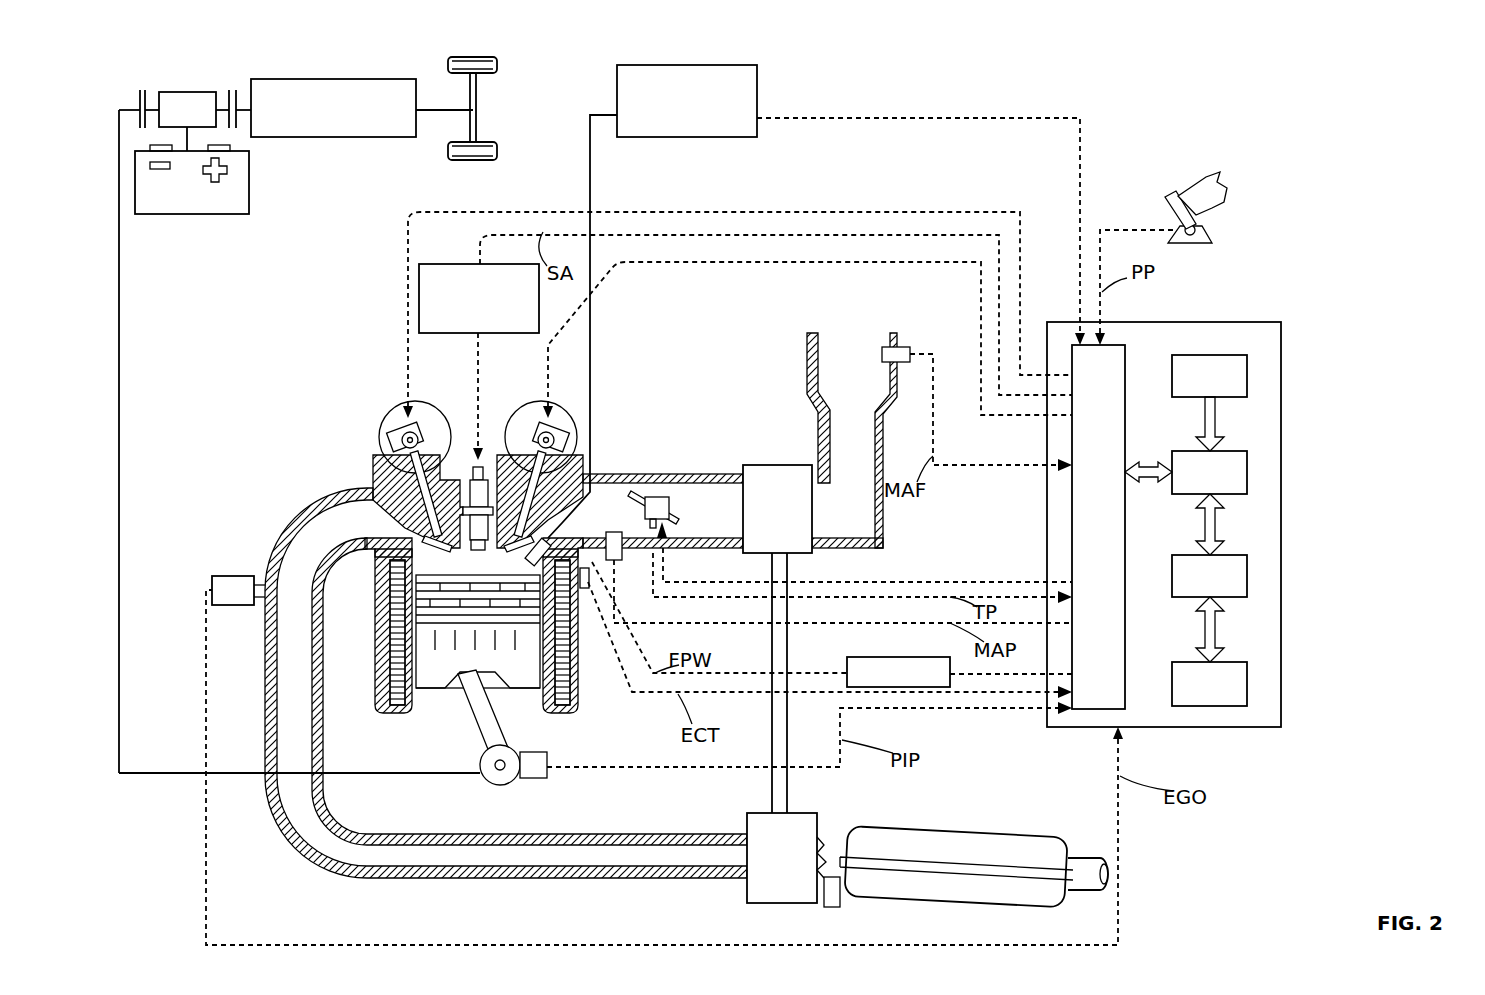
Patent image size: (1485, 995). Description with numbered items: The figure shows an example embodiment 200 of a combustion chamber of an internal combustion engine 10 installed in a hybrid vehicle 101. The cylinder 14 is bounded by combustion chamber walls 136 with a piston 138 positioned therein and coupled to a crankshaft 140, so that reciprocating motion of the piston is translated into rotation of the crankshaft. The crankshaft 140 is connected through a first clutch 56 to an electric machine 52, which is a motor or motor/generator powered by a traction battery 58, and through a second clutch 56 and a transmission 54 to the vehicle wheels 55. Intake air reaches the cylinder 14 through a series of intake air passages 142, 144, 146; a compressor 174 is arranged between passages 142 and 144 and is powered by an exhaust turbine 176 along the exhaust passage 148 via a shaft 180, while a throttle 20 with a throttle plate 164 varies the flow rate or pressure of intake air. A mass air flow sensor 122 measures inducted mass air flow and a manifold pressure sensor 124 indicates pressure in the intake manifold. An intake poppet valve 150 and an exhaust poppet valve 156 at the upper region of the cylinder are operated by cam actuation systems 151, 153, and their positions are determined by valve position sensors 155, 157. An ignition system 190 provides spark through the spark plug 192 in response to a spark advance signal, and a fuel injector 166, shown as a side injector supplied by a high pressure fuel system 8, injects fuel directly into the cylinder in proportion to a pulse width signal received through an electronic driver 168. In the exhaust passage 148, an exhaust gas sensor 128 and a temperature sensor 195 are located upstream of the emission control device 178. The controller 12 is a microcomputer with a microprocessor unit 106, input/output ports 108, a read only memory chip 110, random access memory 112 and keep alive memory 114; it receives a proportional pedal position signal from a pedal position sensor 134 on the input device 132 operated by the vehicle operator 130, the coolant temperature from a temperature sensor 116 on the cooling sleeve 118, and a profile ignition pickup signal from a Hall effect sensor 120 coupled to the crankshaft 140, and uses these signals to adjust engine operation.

The high pressure fuel system 8 is at (760, 83).
The internal combustion engine 10 is at (342, 345).
The controller 12 is at (1281, 322).
The cylinder 14 is at (372, 586).
The throttle 20 is at (658, 492).
The electric machine 52 is at (193, 92).
The transmission 54 is at (392, 137).
The vehicle wheels 55 is at (476, 160).
The clutch 56 is at (138, 100).
The traction battery 58 is at (190, 214).
The hybrid vehicle 101 is at (1158, 96).
The microprocessor unit 106 is at (1247, 470).
The input/output ports 108 is at (1125, 352).
The read only memory chip 110 is at (1247, 380).
The random access memory 112 is at (1247, 576).
The keep alive memory 114 is at (1247, 686).
The temperature sensor 116 is at (587, 590).
The cooling sleeve 118 is at (562, 665).
The Hall effect sensor 120 is at (542, 779).
The mass air flow sensor 122 is at (905, 346).
The manifold pressure sensor 124 is at (618, 562).
The exhaust gas sensor 128 is at (212, 582).
The vehicle operator 130 is at (1220, 192).
The input device 132 is at (1168, 200).
The pedal position sensor 134 is at (1205, 235).
The combustion chamber walls 136 is at (415, 708).
The piston 138 is at (460, 660).
The crankshaft 140 is at (487, 782).
The intake air passage 142 is at (852, 440).
The intake air passage 144 is at (733, 522).
The intake air passage 146 is at (607, 508).
The exhaust passage 148 is at (506, 683).
The intake poppet valve 150 is at (492, 535).
The cam actuation system 151 is at (532, 424).
The cam actuation system 153 is at (408, 424).
The valve position sensor 155 is at (586, 424).
The exhaust poppet valve 156 is at (410, 517).
The valve position sensor 157 is at (398, 436).
The throttle plate 164 is at (592, 472).
The fuel injector 166 is at (548, 538).
The electronic driver 168 is at (849, 660).
The compressor 174 is at (750, 465).
The exhaust turbine 176 is at (747, 895).
The emission control device 178 is at (1028, 836).
The shaft 180 is at (788, 776).
The ignition system 190 is at (436, 264).
The spark plug 192 is at (470, 508).
The temperature sensor 195 is at (838, 906).
The example embodiment 200 is at (1370, 82).